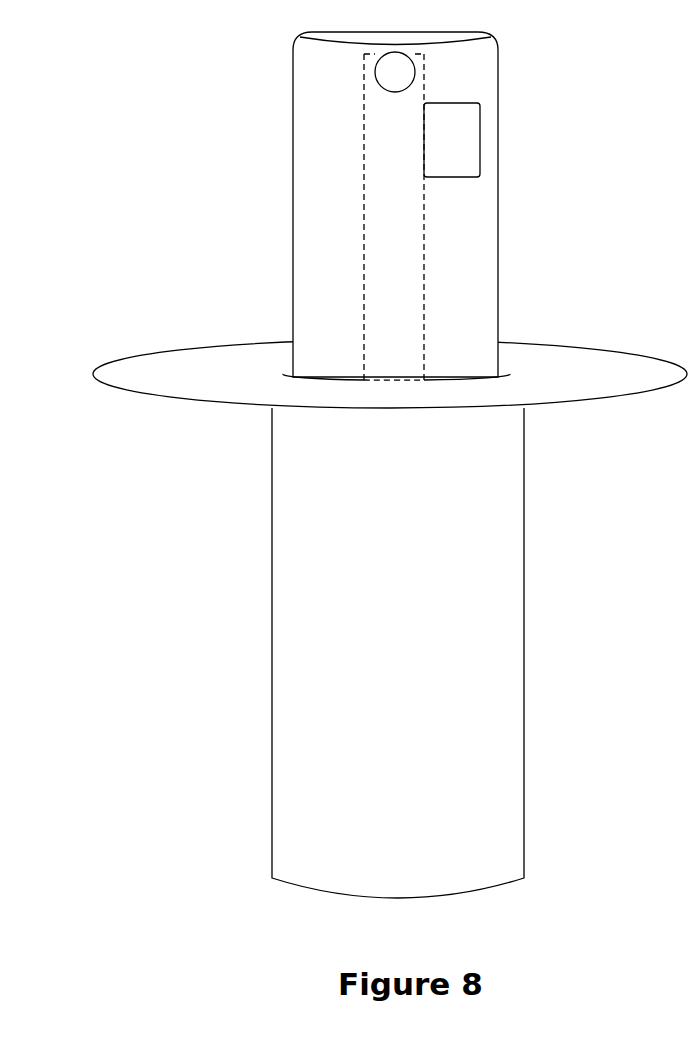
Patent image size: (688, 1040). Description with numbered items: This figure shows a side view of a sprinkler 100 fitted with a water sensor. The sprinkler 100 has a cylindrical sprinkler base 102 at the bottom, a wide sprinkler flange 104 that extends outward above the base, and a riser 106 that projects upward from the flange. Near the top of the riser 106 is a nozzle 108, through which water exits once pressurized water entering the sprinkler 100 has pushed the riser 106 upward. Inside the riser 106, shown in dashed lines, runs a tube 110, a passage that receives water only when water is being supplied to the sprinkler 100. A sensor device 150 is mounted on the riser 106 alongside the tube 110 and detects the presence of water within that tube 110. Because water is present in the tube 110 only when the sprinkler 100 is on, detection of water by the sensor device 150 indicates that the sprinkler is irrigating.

The sprinkler 100 is at (150, 512).
The sprinkler base 102 is at (497, 710).
The sprinkler flange 104 is at (186, 388).
The riser 106 is at (312, 294).
The nozzle 108 is at (378, 82).
The tube 110 is at (424, 217).
The sensor device 150 is at (480, 137).